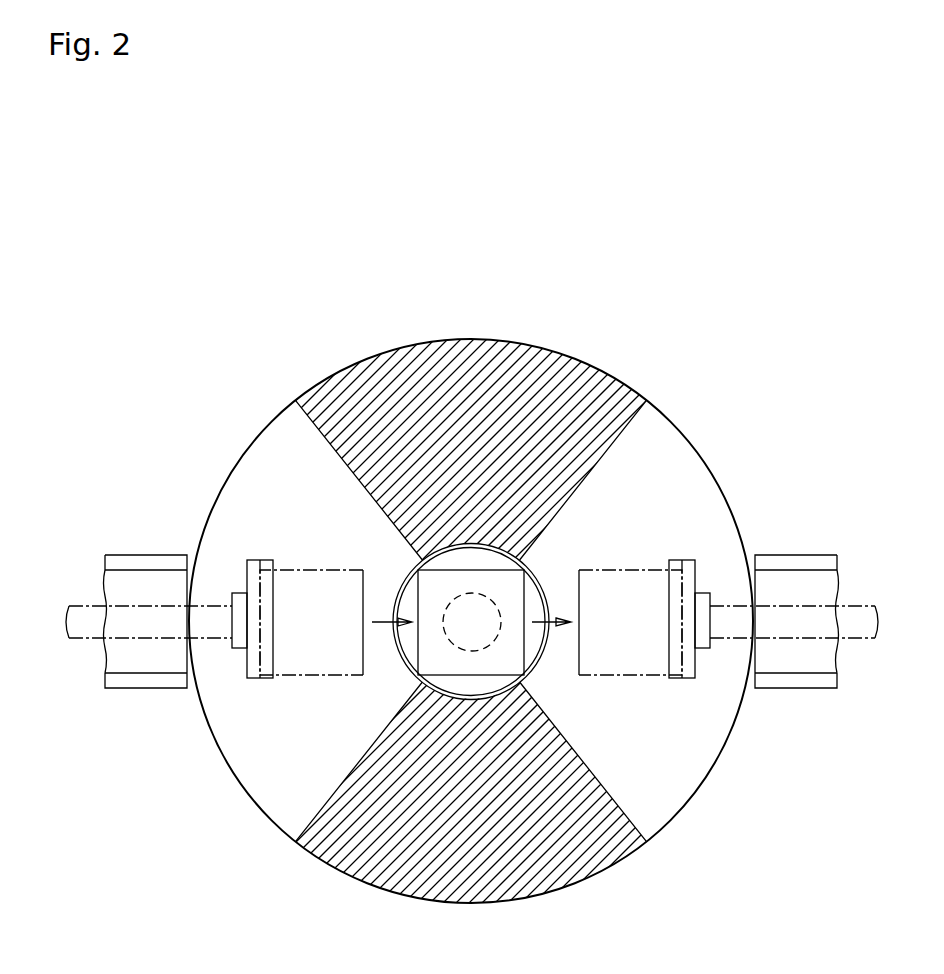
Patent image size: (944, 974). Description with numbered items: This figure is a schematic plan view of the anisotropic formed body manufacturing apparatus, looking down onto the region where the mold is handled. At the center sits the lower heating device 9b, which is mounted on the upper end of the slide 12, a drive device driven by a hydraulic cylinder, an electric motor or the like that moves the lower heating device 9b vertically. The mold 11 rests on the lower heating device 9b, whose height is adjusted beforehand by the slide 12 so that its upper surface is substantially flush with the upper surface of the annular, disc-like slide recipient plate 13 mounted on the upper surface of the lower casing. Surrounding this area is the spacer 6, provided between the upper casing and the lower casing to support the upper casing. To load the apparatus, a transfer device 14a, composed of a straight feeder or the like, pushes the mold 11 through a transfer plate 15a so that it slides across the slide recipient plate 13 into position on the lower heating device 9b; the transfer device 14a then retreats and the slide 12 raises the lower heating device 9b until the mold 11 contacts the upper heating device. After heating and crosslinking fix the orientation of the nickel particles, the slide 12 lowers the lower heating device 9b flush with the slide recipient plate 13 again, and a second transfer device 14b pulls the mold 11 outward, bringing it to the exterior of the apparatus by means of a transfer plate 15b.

The spacer 6 is at (620, 436).
The lower heating device 9b is at (546, 572).
The mold 11 is at (420, 568).
The slide 12 is at (448, 642).
The slide recipient plate 13 is at (252, 801).
The transfer device 14a is at (252, 680).
The transfer device 14b is at (685, 681).
The transfer plate 15a is at (147, 689).
The transfer plate 15b is at (797, 689).